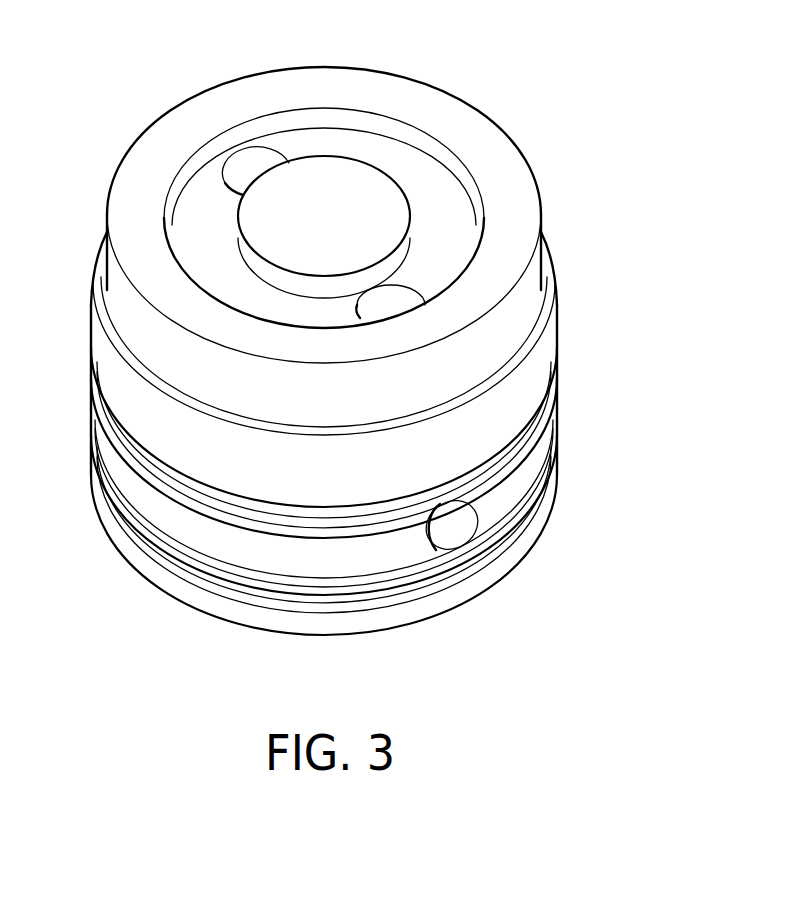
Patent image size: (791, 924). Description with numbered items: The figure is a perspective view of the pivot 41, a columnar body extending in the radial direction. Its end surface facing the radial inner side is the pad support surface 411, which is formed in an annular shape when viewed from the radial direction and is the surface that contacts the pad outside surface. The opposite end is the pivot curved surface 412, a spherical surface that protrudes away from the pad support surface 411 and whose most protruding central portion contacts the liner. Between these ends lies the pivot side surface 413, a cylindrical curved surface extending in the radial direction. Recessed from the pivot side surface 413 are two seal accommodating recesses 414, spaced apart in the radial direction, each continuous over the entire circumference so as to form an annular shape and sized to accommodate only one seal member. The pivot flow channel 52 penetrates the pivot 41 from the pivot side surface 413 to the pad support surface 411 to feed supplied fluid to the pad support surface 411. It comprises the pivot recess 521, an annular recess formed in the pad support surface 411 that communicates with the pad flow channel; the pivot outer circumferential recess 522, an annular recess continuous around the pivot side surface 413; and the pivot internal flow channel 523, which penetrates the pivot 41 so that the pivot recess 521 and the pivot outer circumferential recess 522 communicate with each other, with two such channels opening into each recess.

The pivot 41 is at (530, 100).
The pad support surface 411 is at (497, 152).
The pivot curved surface 412 is at (437, 617).
The pivot side surface 413 is at (547, 348).
The seal accommodating recess 414 is at (108, 437).
The pivot flow channel 52 is at (361, 326).
The pivot recess 521 is at (197, 213).
The pivot outer circumferential recess 522 is at (172, 520).
The pivot internal flow channel 523 is at (453, 527).